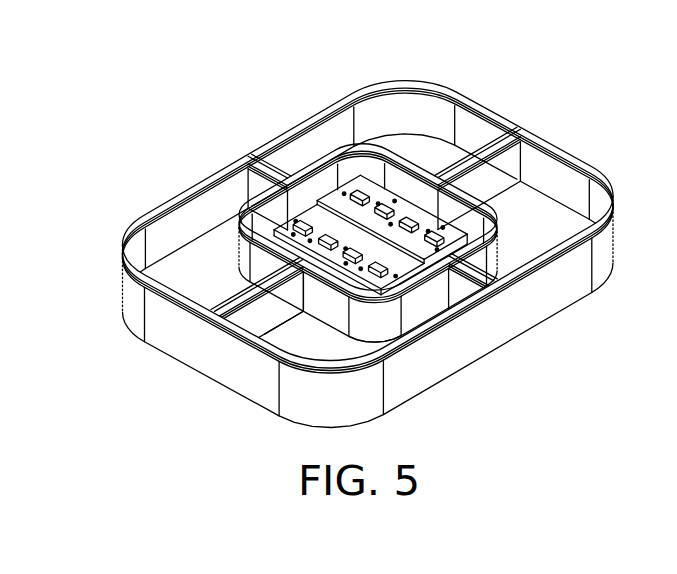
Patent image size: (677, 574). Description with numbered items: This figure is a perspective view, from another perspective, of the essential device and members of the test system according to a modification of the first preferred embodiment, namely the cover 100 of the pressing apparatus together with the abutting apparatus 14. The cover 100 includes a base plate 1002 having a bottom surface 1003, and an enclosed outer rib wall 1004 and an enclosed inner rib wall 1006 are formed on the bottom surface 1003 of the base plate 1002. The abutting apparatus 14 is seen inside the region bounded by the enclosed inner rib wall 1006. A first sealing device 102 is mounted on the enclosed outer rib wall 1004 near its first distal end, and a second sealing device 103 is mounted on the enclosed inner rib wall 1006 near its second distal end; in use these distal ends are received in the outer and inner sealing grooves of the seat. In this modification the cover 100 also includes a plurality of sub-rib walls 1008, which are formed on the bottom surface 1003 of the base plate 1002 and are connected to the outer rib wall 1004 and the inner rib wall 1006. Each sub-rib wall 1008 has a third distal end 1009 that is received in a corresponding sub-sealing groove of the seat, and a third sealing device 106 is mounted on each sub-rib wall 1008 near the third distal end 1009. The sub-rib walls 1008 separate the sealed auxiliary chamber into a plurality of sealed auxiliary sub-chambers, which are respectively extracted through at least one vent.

The cover 100 is at (252, 147).
The first sealing device 102 is at (413, 90).
The second sealing device 103 is at (341, 192).
The abutting apparatus 14 is at (340, 198).
The enclosed outer rib wall 1004 is at (507, 130).
The base plate 1002 is at (553, 217).
The bottom surface 1003 is at (180, 267).
The enclosed inner rib wall 1006 is at (243, 210).
The third distal end 1009 is at (253, 295).
The third sealing device 106 is at (275, 308).
The sub-rib wall 1008 is at (287, 307).